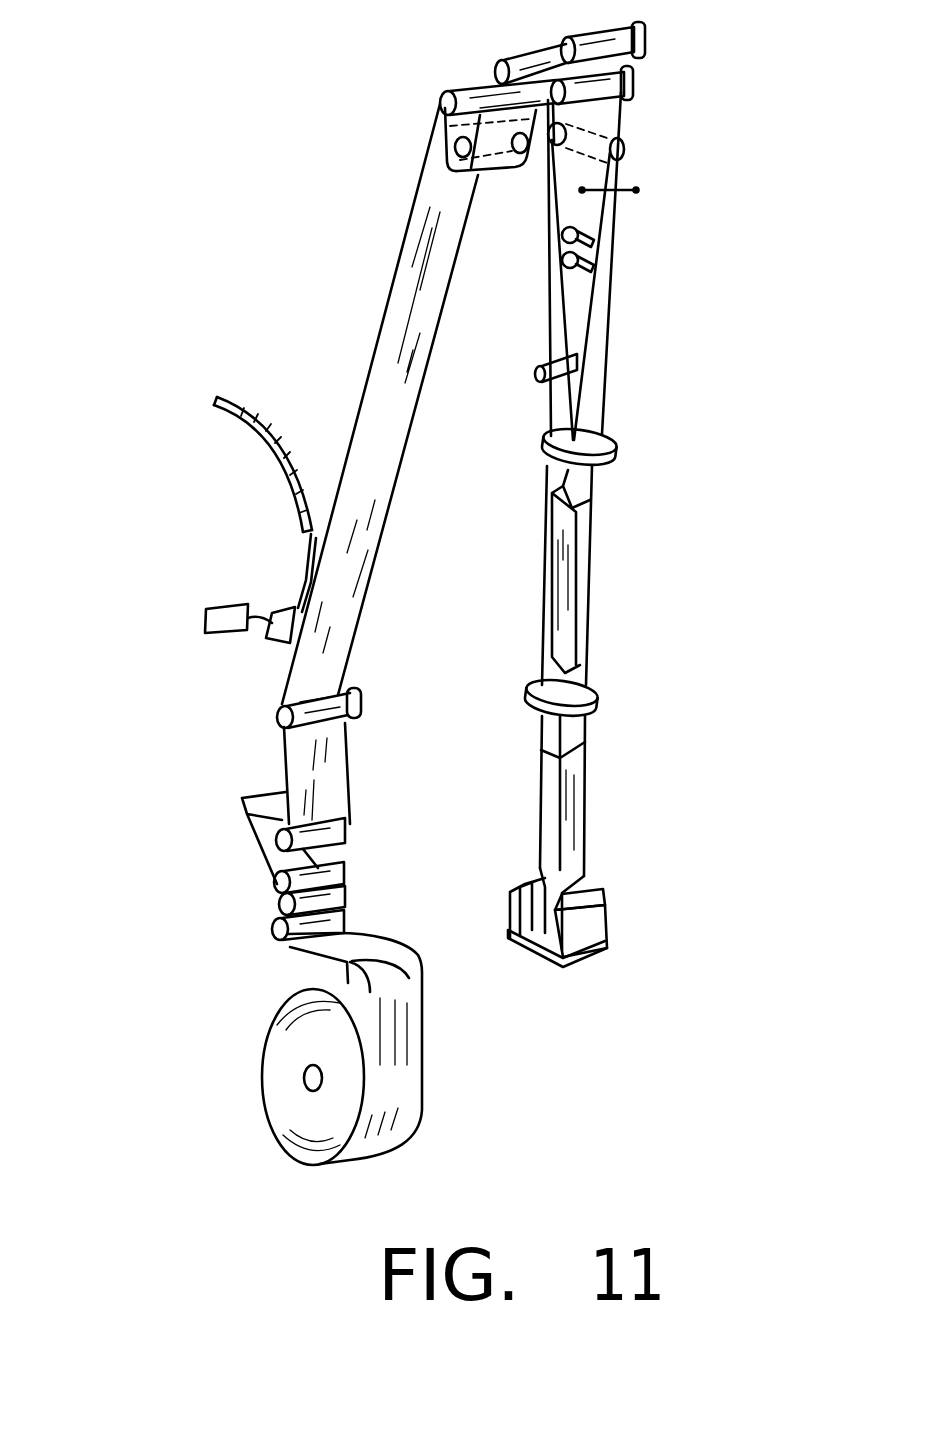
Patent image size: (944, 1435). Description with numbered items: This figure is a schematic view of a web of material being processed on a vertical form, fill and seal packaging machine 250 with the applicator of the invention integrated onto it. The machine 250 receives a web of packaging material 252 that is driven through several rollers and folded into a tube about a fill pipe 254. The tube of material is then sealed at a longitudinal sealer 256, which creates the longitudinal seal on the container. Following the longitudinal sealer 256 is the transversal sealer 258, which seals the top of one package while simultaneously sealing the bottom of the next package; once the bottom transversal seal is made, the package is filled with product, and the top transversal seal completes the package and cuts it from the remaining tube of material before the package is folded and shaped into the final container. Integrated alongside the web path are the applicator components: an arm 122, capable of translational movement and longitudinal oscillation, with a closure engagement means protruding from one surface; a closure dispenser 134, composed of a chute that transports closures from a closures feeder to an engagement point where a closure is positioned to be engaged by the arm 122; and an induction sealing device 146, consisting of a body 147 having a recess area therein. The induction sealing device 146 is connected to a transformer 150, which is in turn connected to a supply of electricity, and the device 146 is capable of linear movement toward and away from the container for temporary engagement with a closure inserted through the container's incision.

The vertical form, fill and seal packaging machine 250 is at (252, 330).
The web of packaging material 252 is at (272, 1032).
The fill pipe 254 is at (537, 368).
The longitudinal sealer 256 is at (567, 603).
The transversal sealer 258 is at (630, 907).
The closure dispenser 134 is at (268, 449).
The arm 122 is at (275, 468).
The induction sealing device 146 is at (272, 608).
The body 147 is at (270, 642).
The transformer 150 is at (207, 604).